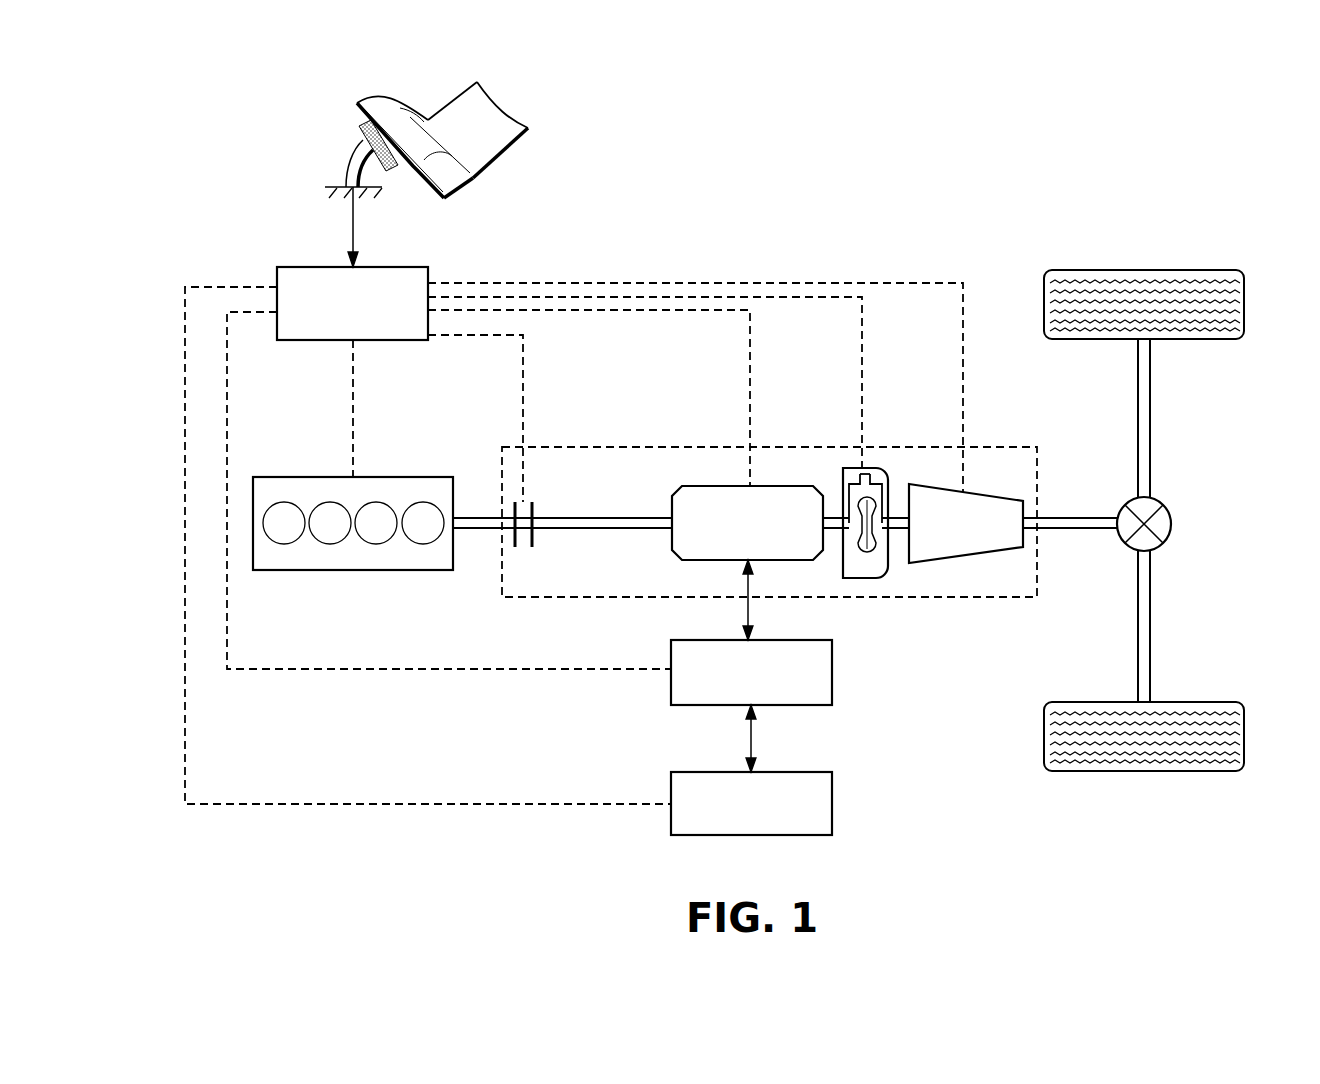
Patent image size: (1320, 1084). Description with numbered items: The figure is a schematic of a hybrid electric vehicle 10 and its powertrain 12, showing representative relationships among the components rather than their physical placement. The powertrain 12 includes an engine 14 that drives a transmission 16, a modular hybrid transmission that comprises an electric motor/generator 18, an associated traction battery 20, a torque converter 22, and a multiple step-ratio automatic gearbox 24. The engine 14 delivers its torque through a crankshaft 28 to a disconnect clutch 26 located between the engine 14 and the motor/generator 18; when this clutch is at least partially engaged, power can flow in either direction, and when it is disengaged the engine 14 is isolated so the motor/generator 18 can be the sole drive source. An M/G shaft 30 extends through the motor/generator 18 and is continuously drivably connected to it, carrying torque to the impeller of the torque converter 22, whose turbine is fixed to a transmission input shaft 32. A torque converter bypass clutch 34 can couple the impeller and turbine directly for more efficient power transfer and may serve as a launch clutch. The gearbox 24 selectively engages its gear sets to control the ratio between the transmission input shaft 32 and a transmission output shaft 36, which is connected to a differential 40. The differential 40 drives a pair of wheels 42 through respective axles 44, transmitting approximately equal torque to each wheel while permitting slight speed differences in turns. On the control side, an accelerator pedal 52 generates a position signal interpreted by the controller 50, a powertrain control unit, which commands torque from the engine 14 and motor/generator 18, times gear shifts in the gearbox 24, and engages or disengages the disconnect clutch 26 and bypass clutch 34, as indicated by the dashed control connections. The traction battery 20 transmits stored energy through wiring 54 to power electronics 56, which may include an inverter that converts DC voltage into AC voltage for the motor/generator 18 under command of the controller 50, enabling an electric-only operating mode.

The hybrid electric vehicle 10 is at (866, 184).
The powertrain 12 is at (410, 714).
The engine 14 is at (308, 477).
The transmission 16 is at (818, 447).
The electric motor/generator 18 is at (717, 486).
The traction battery 20 is at (832, 803).
The torque converter 22 is at (863, 578).
The gearbox 24 is at (967, 558).
The disconnect clutch 26 is at (536, 510).
The crankshaft 28 is at (487, 517).
The M/G shaft 30 is at (631, 517).
The transmission input shaft 32 is at (898, 517).
The torque converter bypass clutch 34 is at (865, 470).
The transmission output shaft 36 is at (1062, 515).
The differential 40 is at (1172, 524).
The wheels 42 is at (1147, 270).
The axles 44 is at (1152, 420).
The controller 50 is at (313, 267).
The accelerator pedal 52 is at (358, 142).
The wiring 54 is at (752, 745).
The power electronics 56 is at (832, 673).